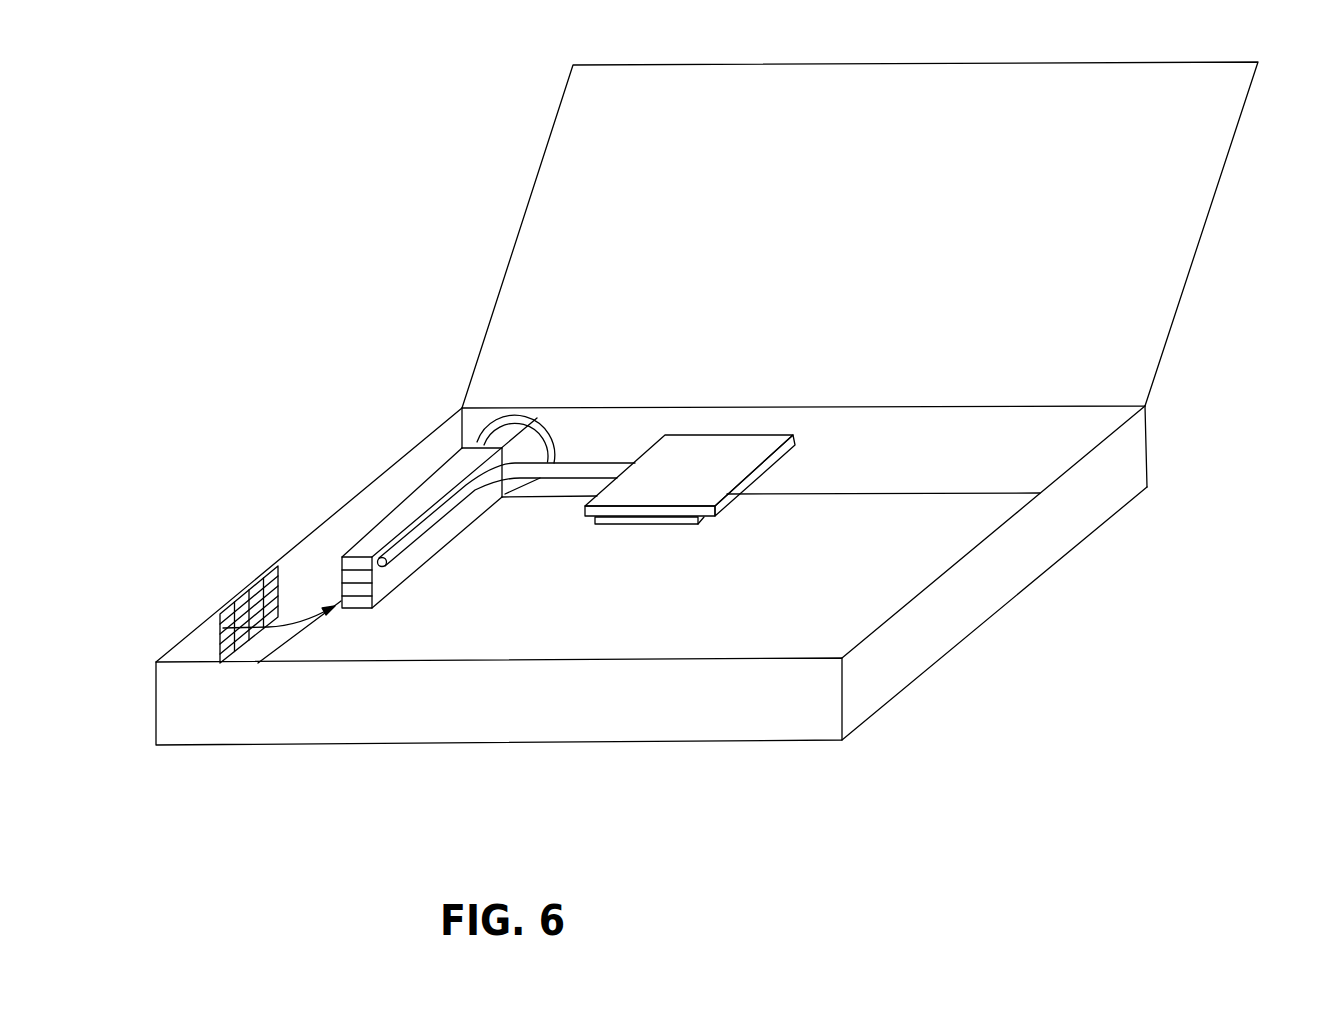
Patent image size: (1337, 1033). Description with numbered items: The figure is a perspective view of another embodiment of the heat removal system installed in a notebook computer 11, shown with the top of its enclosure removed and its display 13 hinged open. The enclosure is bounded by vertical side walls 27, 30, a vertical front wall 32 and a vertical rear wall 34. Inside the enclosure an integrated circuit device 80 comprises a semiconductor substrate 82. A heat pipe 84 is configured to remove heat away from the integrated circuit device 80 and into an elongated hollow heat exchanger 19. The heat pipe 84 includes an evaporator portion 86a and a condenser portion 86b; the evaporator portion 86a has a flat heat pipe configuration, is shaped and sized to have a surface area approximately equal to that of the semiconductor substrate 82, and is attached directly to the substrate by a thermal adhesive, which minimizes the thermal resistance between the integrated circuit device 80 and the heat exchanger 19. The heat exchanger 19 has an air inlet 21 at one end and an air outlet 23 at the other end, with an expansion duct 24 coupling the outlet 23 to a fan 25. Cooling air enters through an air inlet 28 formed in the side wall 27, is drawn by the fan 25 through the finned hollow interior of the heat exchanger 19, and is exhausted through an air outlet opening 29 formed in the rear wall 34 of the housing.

The notebook computer 11 is at (1205, 352).
The display 13 is at (1180, 229).
The heat exchanger 19 is at (407, 560).
The air inlet 21 is at (357, 601).
The air outlet 23 is at (558, 450).
The expansion duct 24 is at (507, 482).
The fan 25 is at (528, 420).
The side wall 27 is at (198, 646).
The air inlet 28 is at (250, 588).
The air outlet opening 29 is at (555, 445).
The side wall 30 is at (946, 619).
The front wall 32 is at (753, 704).
The rear wall 34 is at (771, 470).
The integrated circuit device 80 is at (720, 504).
The semiconductor substrate 82 is at (645, 525).
The heat pipe 84 is at (547, 505).
The evaporator portion 86a is at (757, 450).
The condenser portion 86b is at (437, 517).